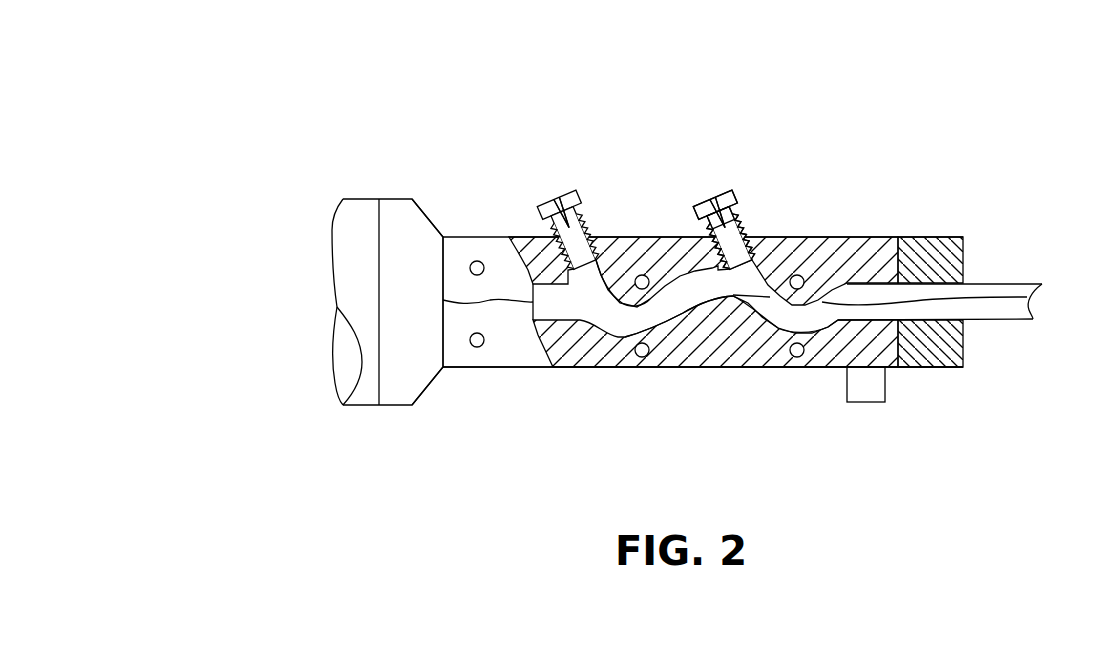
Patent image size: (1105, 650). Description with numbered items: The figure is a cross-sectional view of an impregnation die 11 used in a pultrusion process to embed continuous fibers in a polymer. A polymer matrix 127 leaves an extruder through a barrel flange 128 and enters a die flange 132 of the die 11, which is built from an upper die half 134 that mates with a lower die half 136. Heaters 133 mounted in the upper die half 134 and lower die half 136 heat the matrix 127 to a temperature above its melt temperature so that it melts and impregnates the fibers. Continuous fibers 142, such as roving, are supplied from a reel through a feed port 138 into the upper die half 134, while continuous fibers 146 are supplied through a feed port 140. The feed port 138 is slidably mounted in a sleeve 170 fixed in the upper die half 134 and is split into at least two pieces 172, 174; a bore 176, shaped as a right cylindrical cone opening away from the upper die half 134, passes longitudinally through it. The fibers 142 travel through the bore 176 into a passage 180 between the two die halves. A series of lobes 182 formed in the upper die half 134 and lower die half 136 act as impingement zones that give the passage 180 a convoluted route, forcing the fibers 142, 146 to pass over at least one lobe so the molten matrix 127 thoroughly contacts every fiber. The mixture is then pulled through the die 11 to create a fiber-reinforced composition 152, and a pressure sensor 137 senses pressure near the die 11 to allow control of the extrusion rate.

The impregnation die 11 is at (950, 133).
The polymer matrix 127 is at (600, 312).
The barrel flange 128 is at (345, 250).
The die flange 132 is at (427, 214).
The heaters 133 is at (478, 268).
The upper die half 134 is at (478, 237).
The lower die half 136 is at (468, 367).
The pressure sensor 137 is at (873, 383).
The feed port 138 is at (683, 222).
The feed port 140 is at (562, 190).
The continuous fibers 142 is at (757, 275).
The continuous fibers 146 is at (575, 235).
The fiber-reinforced composition 152 is at (1010, 287).
The sleeve 170 is at (746, 224).
The piece 172 is at (743, 208).
The piece 174 is at (704, 225).
The bore 176 is at (736, 199).
The passage 180 is at (657, 318).
The lobes 182 is at (735, 300).